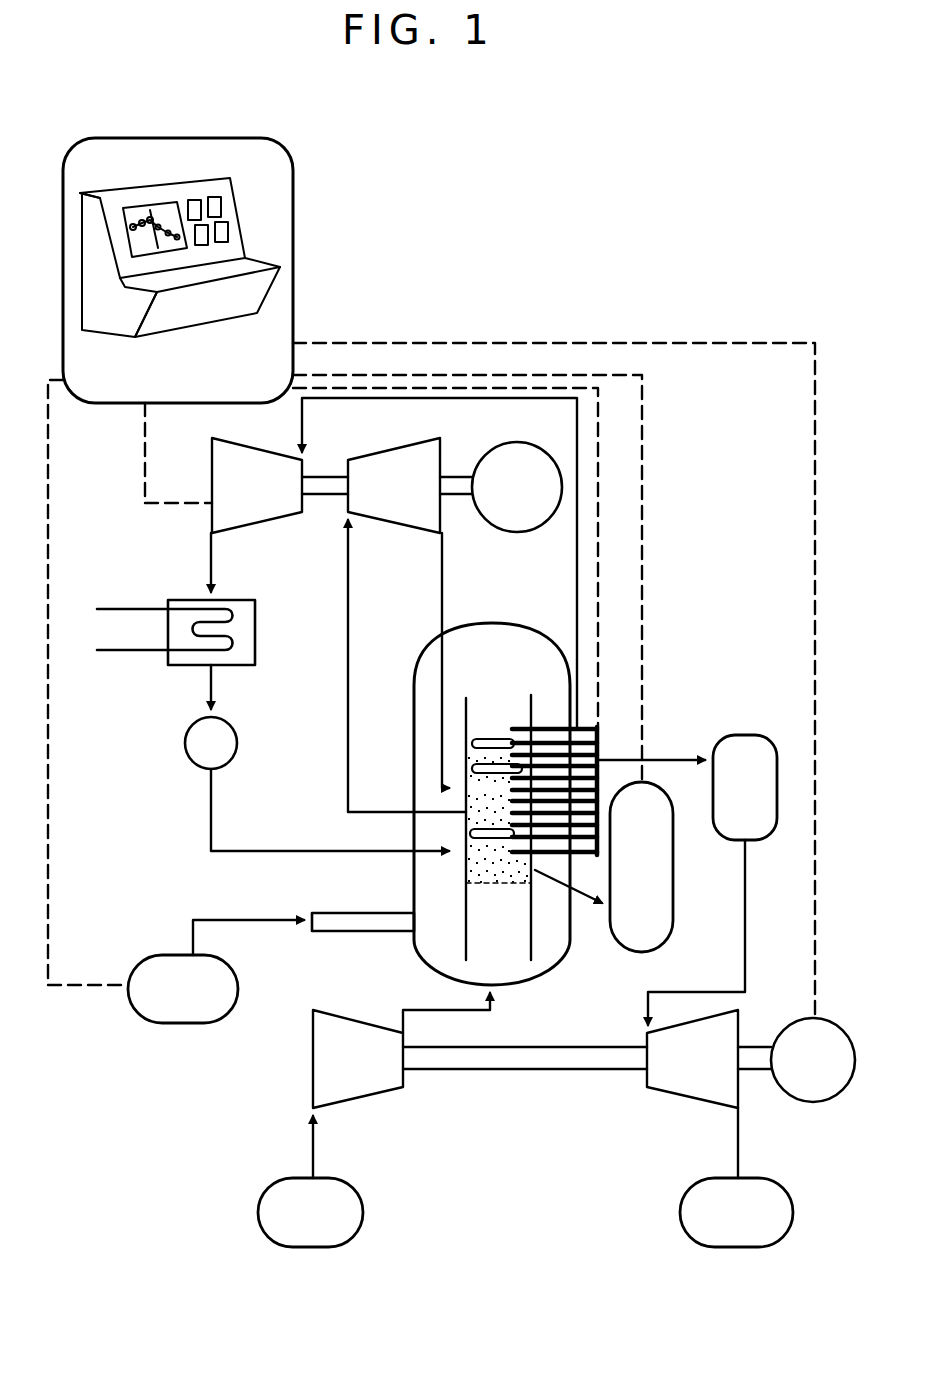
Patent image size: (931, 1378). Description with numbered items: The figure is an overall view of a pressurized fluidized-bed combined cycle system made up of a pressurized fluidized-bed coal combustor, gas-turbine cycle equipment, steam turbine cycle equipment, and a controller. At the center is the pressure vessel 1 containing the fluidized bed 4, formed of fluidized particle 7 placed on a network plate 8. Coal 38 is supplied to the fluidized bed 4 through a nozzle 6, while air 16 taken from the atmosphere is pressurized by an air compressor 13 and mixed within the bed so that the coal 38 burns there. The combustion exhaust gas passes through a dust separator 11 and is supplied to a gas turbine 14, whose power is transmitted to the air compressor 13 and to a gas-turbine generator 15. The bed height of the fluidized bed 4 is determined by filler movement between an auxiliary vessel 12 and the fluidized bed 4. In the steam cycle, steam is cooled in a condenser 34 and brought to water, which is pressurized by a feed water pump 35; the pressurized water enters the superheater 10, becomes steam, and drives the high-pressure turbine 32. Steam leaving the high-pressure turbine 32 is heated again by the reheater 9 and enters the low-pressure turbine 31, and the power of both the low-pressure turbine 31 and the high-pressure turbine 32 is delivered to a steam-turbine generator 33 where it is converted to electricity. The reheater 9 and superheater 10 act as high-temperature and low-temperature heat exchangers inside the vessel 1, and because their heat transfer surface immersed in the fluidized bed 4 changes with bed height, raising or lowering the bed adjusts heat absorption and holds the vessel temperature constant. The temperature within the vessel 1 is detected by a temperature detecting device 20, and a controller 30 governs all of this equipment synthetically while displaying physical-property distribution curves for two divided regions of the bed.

The vessel 1 is at (414, 690).
The fluidized bed 4 is at (455, 808).
The nozzle 6 is at (365, 913).
The fluidized particle 7 is at (515, 882).
The network plate 8 is at (463, 885).
The reheater 9 is at (492, 740).
The superheater 10 is at (472, 883).
The dust separator 11 is at (745, 735).
The auxiliary vessel 12 is at (673, 868).
The air compressor 13 is at (375, 1095).
The gas turbine 14 is at (687, 1098).
The gas-turbine generator 15 is at (804, 1018).
The air 16 is at (363, 1212).
The temperature detecting device 20 is at (590, 730).
The controller 30 is at (293, 210).
The low-pressure turbine 31 is at (212, 457).
The high-pressure turbine 32 is at (377, 450).
The steam-turbine generator 33 is at (517, 442).
The condenser 34 is at (255, 607).
The feed water pump 35 is at (237, 743).
The coal 38 is at (184, 1023).